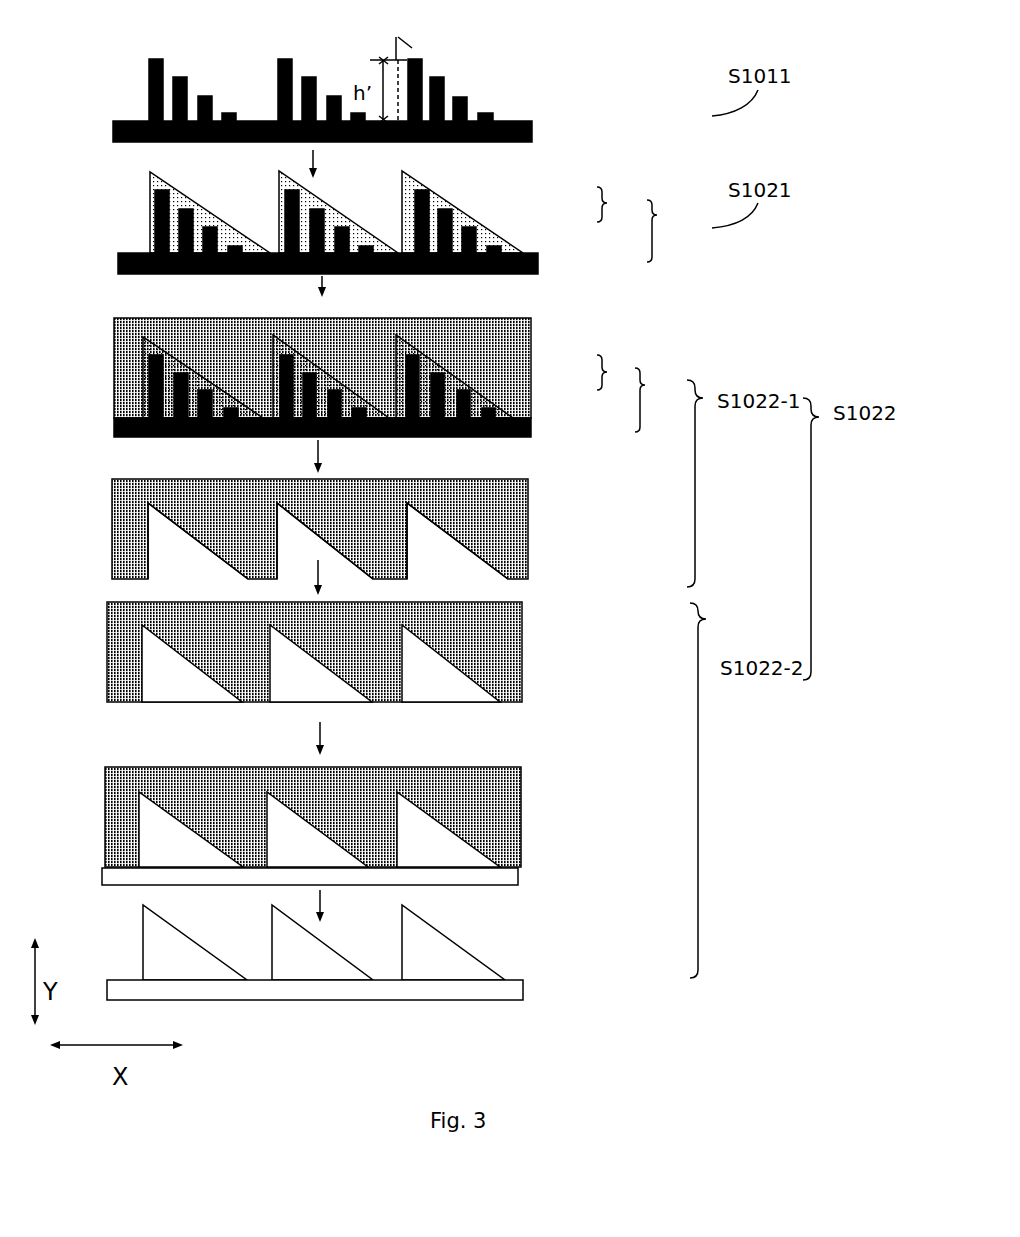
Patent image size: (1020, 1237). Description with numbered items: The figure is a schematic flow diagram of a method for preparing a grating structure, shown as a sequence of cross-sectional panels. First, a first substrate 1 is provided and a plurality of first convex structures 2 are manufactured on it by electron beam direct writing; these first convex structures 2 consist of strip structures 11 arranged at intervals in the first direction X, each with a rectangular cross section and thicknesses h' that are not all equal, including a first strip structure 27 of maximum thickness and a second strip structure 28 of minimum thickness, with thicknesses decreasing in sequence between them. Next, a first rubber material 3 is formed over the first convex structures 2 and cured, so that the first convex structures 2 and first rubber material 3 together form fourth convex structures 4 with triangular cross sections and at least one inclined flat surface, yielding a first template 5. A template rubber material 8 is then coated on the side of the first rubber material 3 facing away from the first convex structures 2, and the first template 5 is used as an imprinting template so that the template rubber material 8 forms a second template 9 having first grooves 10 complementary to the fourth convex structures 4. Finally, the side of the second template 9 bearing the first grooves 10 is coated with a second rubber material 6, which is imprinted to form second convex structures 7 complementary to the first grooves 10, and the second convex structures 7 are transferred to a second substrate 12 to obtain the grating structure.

The first substrate 1 is at (532, 132).
The first convex structures 2 is at (425, 62).
The strip structures 11 is at (442, 70).
The first strip structure 27 is at (428, 62).
The second strip structure 28 is at (488, 103).
The first rubber material 3 is at (440, 196).
The fourth convex structures 4 is at (620, 287).
The first template 5 is at (670, 298).
The template rubber material 8 is at (505, 332).
The second template 9 is at (460, 630).
The first grooves 10 is at (437, 538).
The second convex structures 7 is at (473, 688).
The second rubber material 6 is at (472, 856).
The second substrate 12 is at (487, 878).